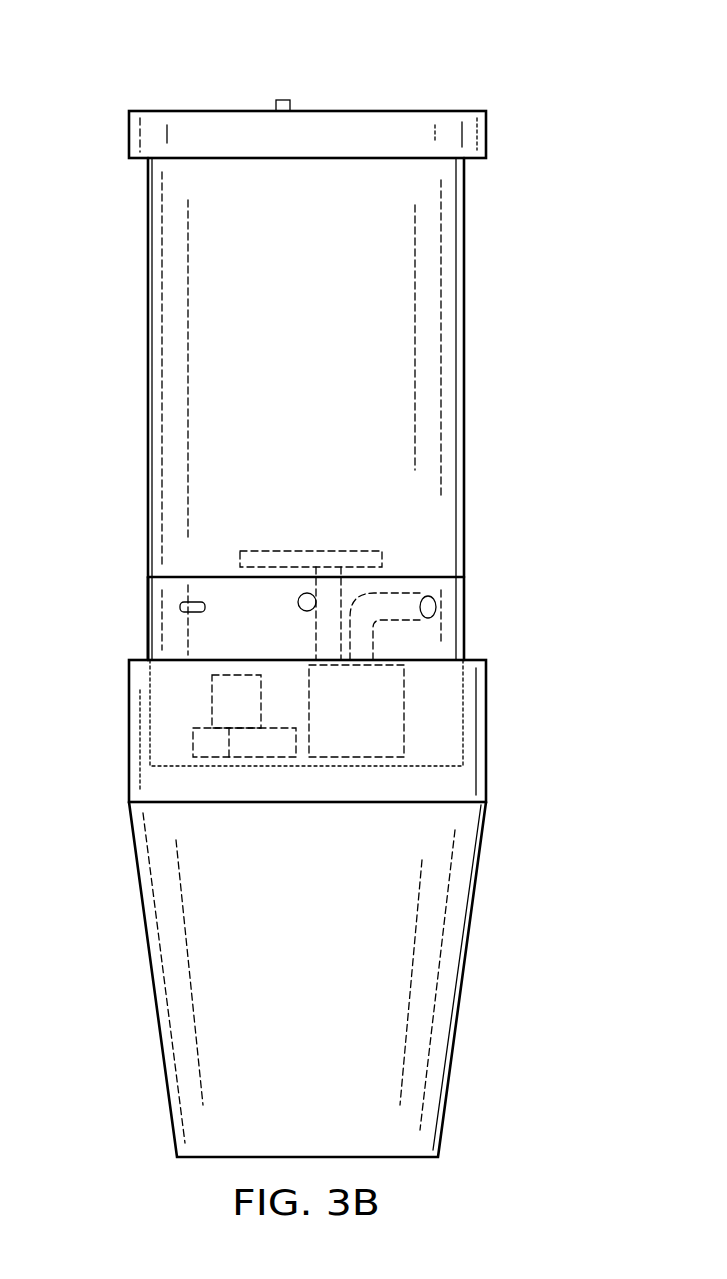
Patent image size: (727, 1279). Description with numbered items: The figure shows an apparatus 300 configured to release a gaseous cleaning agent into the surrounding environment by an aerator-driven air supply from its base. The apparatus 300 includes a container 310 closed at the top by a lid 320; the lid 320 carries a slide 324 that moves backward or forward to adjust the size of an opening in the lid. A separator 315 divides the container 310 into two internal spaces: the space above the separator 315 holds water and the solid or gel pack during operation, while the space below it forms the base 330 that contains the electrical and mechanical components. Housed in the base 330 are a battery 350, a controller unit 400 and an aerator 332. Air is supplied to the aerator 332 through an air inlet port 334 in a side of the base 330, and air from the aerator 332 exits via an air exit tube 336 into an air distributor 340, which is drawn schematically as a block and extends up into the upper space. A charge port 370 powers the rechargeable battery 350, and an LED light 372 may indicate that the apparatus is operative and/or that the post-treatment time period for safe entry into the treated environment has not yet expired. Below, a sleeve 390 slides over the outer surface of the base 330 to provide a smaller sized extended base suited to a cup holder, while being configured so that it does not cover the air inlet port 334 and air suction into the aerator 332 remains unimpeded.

The apparatus 300 is at (470, 74).
The container 310 is at (466, 345).
The separator 315 is at (393, 575).
The lid 320 is at (128, 133).
The slide 324 is at (283, 98).
The base 330 is at (148, 600).
The aerator 332 is at (404, 711).
The air inlet port 334 is at (436, 608).
The air exit tube 336 is at (342, 594).
The air distributor 340 is at (300, 550).
The battery 350 is at (212, 710).
The charge port 370 is at (188, 613).
The LED light 372 is at (298, 602).
The sleeve 390 is at (152, 979).
The controller unit 400 is at (252, 758).